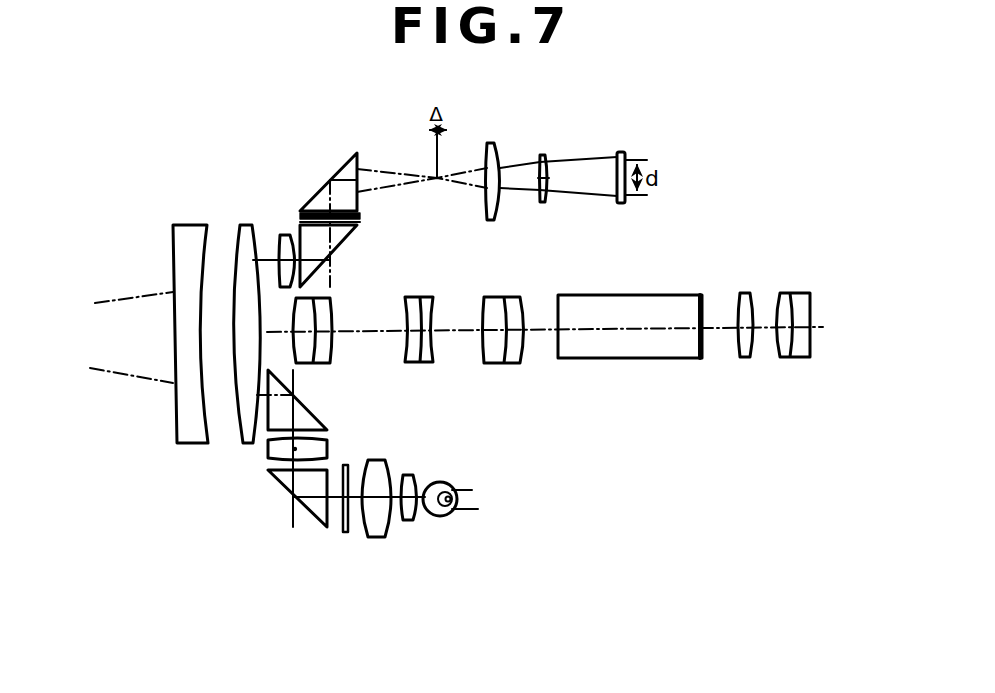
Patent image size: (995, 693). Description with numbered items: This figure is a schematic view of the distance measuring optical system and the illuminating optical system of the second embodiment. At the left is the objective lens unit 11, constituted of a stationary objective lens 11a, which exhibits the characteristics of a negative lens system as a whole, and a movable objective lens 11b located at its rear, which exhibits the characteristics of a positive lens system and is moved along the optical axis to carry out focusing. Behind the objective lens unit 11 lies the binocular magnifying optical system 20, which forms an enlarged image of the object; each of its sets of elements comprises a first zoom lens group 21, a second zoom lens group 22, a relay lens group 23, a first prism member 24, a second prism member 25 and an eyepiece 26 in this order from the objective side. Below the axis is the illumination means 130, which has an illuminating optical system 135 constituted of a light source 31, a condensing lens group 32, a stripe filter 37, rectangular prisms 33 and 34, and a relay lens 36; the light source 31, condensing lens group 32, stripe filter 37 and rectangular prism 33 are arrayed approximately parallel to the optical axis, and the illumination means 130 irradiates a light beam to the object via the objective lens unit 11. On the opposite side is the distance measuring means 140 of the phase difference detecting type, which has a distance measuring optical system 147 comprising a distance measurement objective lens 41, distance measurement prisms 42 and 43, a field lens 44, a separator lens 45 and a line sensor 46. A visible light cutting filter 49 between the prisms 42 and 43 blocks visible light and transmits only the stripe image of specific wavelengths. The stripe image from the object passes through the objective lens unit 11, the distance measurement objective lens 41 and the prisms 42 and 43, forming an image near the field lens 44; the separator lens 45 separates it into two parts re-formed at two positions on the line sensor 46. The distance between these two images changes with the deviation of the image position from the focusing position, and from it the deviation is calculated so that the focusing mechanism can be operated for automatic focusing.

The objective lens unit 11 is at (197, 275).
The stationary objective lens 11a is at (190, 225).
The movable objective lens 11b is at (229, 306).
The distance measurement objective lens 41 is at (285, 235).
The distance measurement prism 42 is at (347, 238).
The distance measurement prism 43 is at (340, 168).
The visible light cutting filter 49 is at (360, 218).
The distance measuring optical system 147 is at (370, 136).
The field lens 44 is at (490, 143).
The separator lens 45 is at (548, 155).
The line sensor 46 is at (621, 152).
The distance measuring means 140 is at (604, 152).
The binocular magnifying optical system 20 is at (513, 365).
The first zoom lens group 21 is at (320, 365).
The second zoom lens group 22 is at (418, 363).
The relay lens group 23 is at (500, 363).
The first prism member 24 is at (630, 359).
The second prism member 25 is at (595, 360).
The eyepiece 26 is at (738, 366).
The rectangular prism 34 is at (327, 425).
The relay lens 36 is at (268, 448).
The illuminating optical system 135 is at (254, 521).
The rectangular prism 33 is at (307, 512).
The stripe filter 37 is at (343, 536).
The condensing lens group 32 is at (418, 543).
The light source 31 is at (447, 483).
The illumination means 130 is at (414, 514).